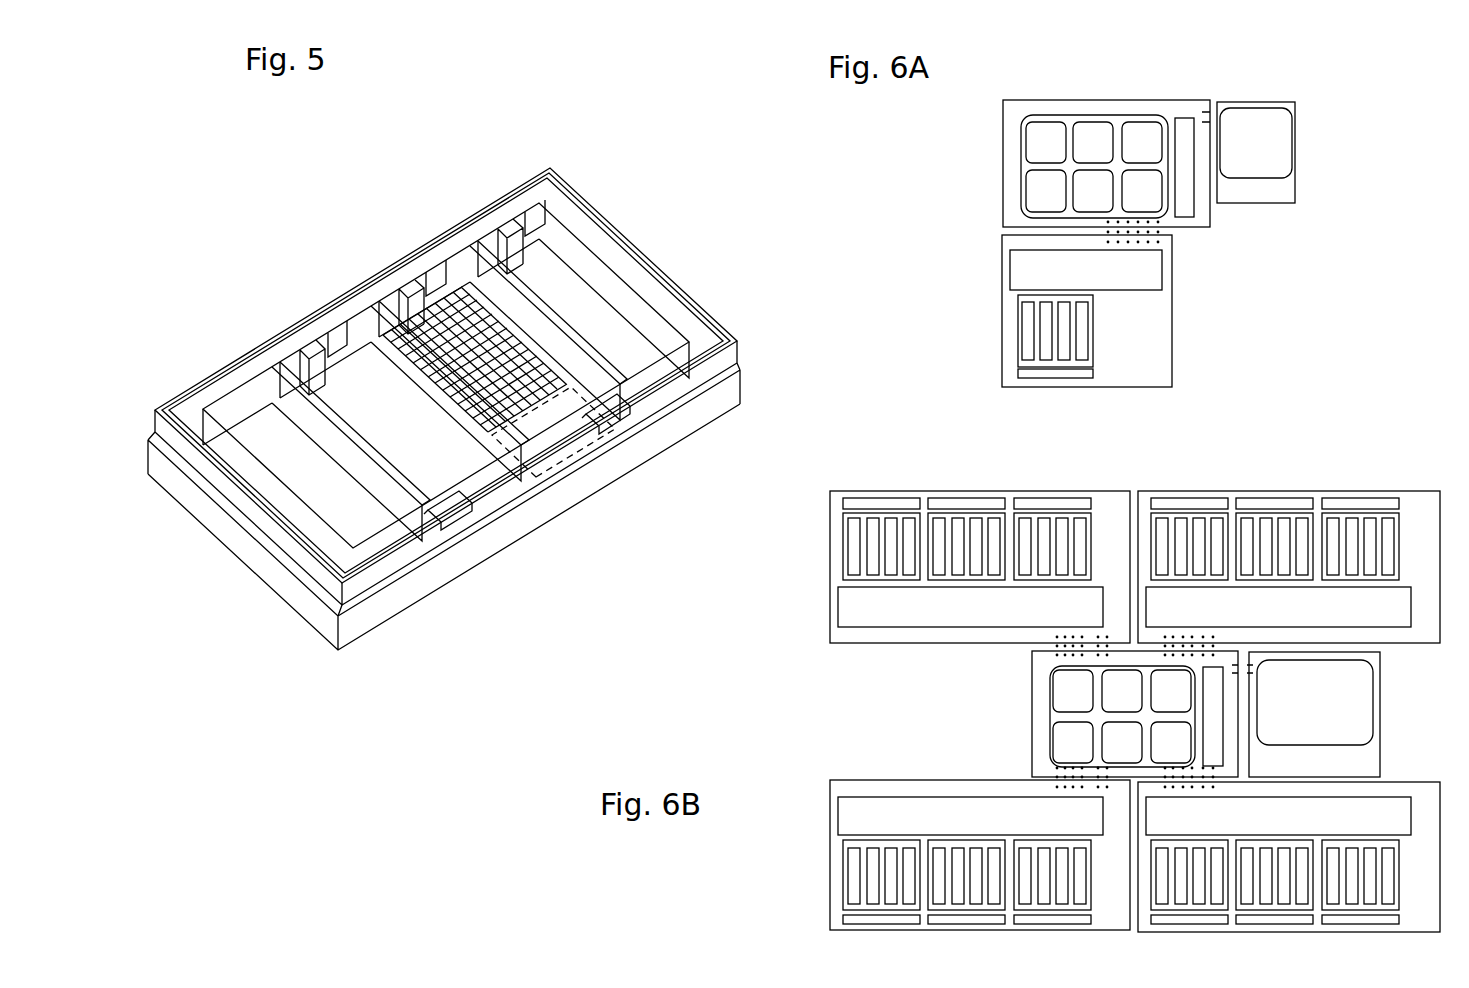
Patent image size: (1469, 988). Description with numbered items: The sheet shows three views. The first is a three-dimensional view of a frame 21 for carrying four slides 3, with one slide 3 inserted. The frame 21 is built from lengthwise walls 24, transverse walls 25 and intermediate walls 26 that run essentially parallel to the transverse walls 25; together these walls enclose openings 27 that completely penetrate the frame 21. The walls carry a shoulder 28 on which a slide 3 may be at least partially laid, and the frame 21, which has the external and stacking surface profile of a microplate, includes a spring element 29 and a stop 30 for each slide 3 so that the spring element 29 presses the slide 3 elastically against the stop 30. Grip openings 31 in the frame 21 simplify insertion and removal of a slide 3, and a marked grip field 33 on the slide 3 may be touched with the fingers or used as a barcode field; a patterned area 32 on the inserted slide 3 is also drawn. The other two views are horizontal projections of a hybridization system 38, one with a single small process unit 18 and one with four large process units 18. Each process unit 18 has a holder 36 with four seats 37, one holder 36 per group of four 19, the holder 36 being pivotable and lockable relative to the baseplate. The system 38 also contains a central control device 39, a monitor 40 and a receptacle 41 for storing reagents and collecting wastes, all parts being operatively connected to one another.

In FIG. 5, the slide 3 is at (458, 265).
In FIG. 6A, the process unit 18 is at (1128, 342).
In FIG. 6B, the process unit 18 is at (1095, 552).
In FIG. 6A, the group of four 19 is at (980, 327).
In FIG. 6B, the group of four 19 is at (897, 477).
In FIG. 5, the frame 21 is at (588, 510).
In FIG. 5, the lengthwise walls 24 is at (323, 305).
In FIG. 5, the transverse walls 25 is at (628, 237).
In FIG. 5, the intermediate walls 26 is at (455, 265).
In FIG. 5, the openings 27 is at (277, 492).
In FIG. 5, the shoulder 28 is at (243, 380).
In FIG. 5, the spring element 29 is at (405, 282).
In FIG. 5, the stop 30 is at (613, 413).
In FIG. 5, the grip openings 31 is at (597, 445).
In FIG. 5, the grid insert 32 is at (459, 344).
In FIG. 5, the grip field 33 is at (542, 416).
In FIG. 6A, the holder 36 is at (1040, 358).
In FIG. 6B, the holder 36 is at (883, 850).
In FIG. 6B, the seats 37 is at (910, 880).
In FIG. 6A, the system 38 is at (1243, 258).
In FIG. 6B, the system 38 is at (770, 843).
In FIG. 6A, the central control device 39 is at (1013, 117).
In FIG. 6B, the central control device 39 is at (1040, 718).
In FIG. 6A, the monitor 40 is at (1233, 162).
In FIG. 6B, the monitor 40 is at (1279, 709).
In FIG. 6A, the receptacle 41 is at (1045, 185).
In FIG. 6B, the receptacle 41 is at (1061, 705).